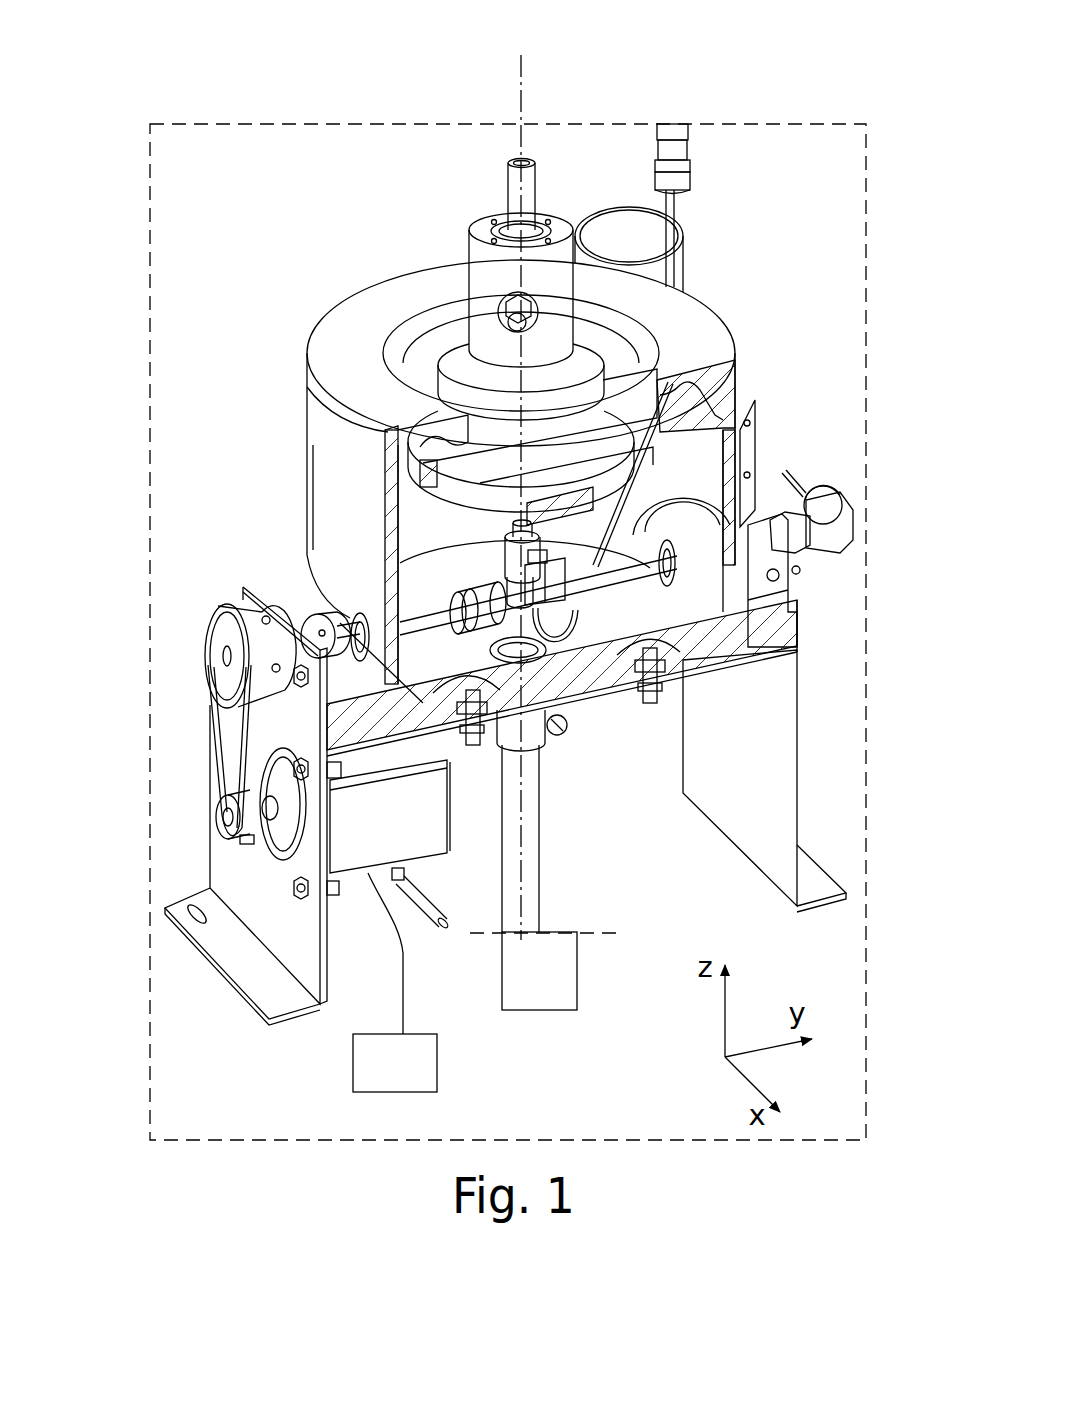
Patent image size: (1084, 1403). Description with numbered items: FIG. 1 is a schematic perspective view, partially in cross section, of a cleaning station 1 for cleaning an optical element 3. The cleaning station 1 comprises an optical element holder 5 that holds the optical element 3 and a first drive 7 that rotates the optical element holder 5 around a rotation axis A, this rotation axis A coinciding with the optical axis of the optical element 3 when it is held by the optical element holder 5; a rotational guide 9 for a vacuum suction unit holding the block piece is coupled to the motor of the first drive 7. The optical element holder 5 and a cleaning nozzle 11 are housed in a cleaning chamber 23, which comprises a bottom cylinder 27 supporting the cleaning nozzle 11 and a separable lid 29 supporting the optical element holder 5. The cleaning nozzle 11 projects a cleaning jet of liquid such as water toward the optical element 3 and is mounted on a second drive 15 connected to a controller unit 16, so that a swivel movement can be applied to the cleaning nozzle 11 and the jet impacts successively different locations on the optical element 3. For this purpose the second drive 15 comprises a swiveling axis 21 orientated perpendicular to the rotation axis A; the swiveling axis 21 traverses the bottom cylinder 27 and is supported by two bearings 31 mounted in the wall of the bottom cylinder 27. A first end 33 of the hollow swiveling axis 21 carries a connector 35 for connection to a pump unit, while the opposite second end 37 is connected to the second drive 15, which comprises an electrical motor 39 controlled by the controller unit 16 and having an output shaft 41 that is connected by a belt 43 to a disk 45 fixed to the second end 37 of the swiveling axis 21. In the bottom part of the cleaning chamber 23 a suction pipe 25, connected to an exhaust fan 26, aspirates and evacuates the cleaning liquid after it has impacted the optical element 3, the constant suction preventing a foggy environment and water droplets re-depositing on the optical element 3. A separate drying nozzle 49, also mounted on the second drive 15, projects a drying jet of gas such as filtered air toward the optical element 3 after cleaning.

The cleaning station 1 is at (750, 247).
The rotation axis A is at (526, 75).
The optical element 3 is at (437, 517).
The optical element holder 5 is at (413, 337).
The first drive 7 is at (452, 200).
The rotational guide 9 is at (487, 260).
The cleaning nozzle 11 is at (500, 542).
The second drive 15 is at (223, 806).
The controller unit 16 is at (353, 1068).
The swiveling axis 21 is at (629, 576).
The cleaning chamber 23 is at (752, 340).
The suction pipe 25 is at (540, 798).
The exhaust fan 26 is at (578, 995).
The bottom cylinder 27 is at (391, 478).
The separable lid 29 is at (338, 353).
The bearings 31 is at (347, 613).
The first end 33 is at (862, 542).
The connector 35 is at (830, 500).
The second end 37 is at (351, 682).
The electrical motor 39 is at (390, 844).
The output shaft 41 is at (273, 858).
The belt 43 is at (213, 740).
The disk 45 is at (217, 647).
The drying nozzle 49 is at (567, 567).